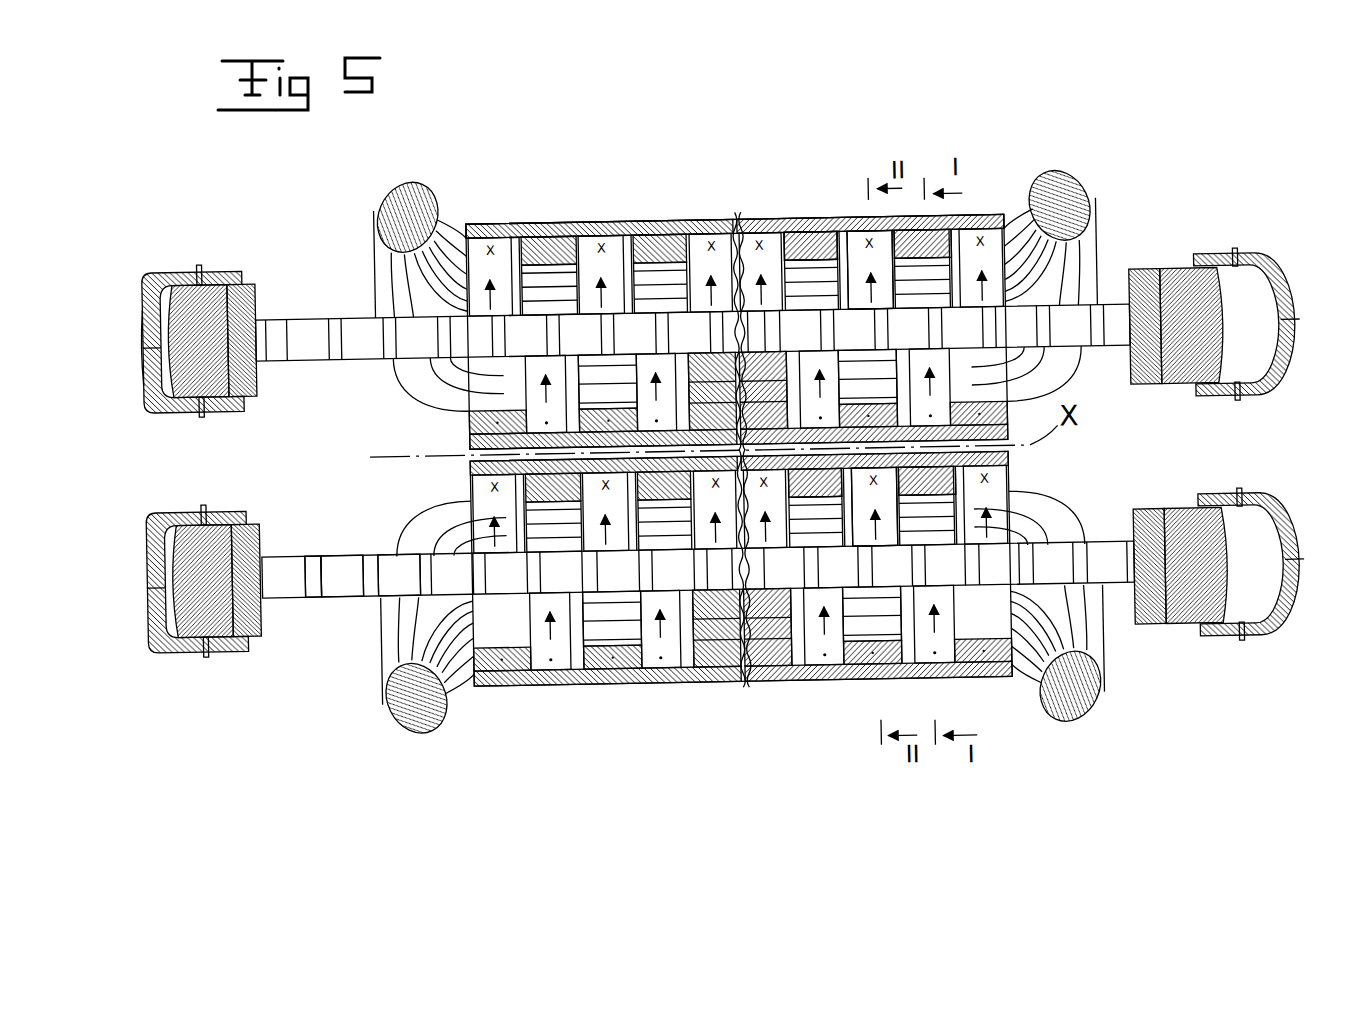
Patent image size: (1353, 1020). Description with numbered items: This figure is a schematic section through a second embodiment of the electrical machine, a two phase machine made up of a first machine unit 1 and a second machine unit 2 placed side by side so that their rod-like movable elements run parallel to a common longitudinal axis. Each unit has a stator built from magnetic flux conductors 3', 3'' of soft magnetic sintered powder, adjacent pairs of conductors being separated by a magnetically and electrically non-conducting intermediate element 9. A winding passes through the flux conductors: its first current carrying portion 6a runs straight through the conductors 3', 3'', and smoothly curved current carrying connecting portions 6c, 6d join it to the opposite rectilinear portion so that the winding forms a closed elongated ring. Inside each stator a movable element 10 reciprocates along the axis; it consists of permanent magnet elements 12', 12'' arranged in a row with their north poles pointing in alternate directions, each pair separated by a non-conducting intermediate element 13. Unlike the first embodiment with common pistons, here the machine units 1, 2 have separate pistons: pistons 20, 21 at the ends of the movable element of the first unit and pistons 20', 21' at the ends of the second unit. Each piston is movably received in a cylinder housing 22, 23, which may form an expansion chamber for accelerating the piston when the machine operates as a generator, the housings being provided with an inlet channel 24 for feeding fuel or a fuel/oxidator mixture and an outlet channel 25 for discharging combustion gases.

The first machine unit 1 is at (710, 134).
The second machine unit 2 is at (678, 760).
The magnetic flux conductor 3' is at (873, 420).
The magnetic flux conductor 3'' is at (867, 427).
The first current carrying portion 6a is at (805, 250).
The current carrying connecting portion 6c is at (396, 192).
The current carrying connecting portion 6d is at (1072, 180).
The intermediate element 9 is at (776, 228).
The movable element 10 is at (333, 361).
The permanent magnet element 12' is at (326, 603).
The permanent magnet element 12'' is at (389, 537).
The intermediate element 13 is at (311, 560).
The piston 20 is at (211, 304).
The piston 20' is at (203, 553).
The piston 21 is at (1175, 278).
The piston 21' is at (1180, 530).
The cylinder housing 22 is at (177, 405).
The cylinder housing 23 is at (1270, 406).
The inlet channel 24 is at (146, 340).
The outlet channel 25 is at (203, 652).